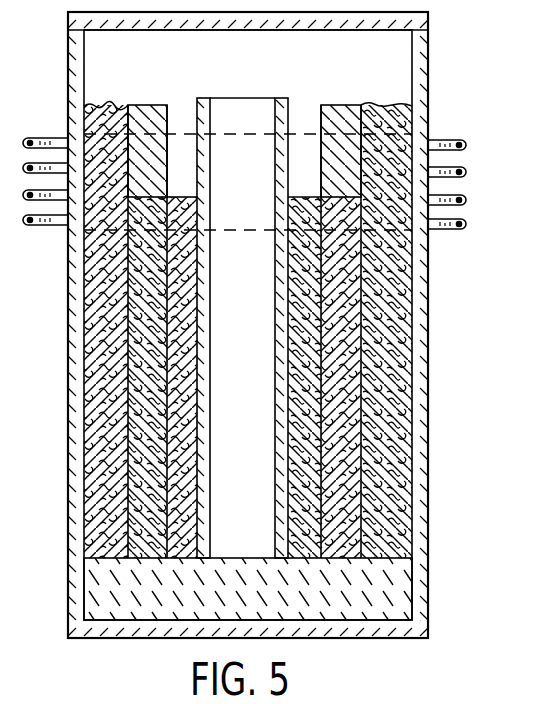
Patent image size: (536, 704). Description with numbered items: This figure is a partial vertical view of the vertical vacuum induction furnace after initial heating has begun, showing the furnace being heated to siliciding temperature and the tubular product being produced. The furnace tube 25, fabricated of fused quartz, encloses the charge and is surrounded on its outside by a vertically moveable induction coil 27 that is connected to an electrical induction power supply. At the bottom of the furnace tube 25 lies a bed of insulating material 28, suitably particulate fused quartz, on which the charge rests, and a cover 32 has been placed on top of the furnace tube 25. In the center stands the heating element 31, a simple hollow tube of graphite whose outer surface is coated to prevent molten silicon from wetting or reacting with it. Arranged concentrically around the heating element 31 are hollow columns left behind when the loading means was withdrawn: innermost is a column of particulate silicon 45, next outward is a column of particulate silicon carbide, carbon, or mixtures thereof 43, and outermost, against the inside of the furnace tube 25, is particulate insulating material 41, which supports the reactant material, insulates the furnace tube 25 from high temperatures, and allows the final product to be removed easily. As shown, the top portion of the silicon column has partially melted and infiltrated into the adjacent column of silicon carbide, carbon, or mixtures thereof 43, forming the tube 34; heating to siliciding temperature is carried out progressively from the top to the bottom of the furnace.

The furnace tube 25 is at (421, 363).
The induction coil 27 is at (469, 173).
The insulating material 28 is at (386, 593).
The heating element 31 is at (281, 354).
The cover 32 is at (430, 16).
The tube 34 is at (363, 76).
The particulate insulating material 41 is at (400, 285).
The particulate silicon carbide, carbon, or mixtures thereof 43 is at (350, 450).
The particulate silicon 45 is at (297, 487).